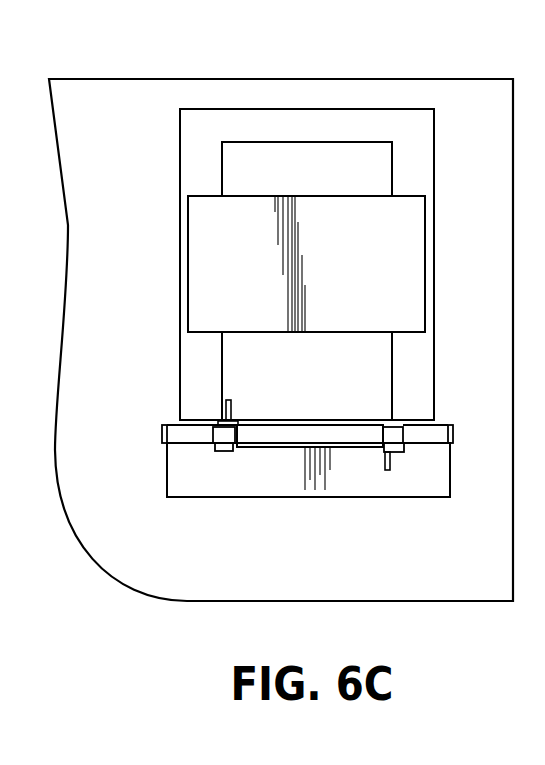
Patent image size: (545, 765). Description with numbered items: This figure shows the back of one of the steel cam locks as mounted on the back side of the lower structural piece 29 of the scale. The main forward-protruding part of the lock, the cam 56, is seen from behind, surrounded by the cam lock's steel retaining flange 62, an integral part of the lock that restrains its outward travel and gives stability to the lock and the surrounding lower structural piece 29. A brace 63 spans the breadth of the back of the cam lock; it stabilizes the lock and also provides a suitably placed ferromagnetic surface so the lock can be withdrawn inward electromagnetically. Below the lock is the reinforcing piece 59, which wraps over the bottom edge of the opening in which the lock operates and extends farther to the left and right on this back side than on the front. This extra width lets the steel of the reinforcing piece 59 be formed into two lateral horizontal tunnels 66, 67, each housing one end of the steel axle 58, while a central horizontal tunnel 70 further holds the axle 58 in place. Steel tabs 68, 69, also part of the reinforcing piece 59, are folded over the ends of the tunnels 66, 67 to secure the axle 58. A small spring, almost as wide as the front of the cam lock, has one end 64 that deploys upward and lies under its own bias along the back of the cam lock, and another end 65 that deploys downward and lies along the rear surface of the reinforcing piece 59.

The lower structural piece 29 is at (440, 165).
The cam 56 is at (283, 173).
The retaining flange 62 is at (414, 127).
The brace 63 is at (410, 262).
The end of small spring 64 is at (232, 410).
The steel tab 68 is at (162, 438).
The lateral horizontal tunnel 66 is at (200, 438).
The steel axle 58 is at (227, 450).
The central horizontal tunnel 70 is at (298, 440).
The end of small spring 65 is at (380, 460).
The lateral horizontal tunnel 67 is at (427, 438).
The reinforcing piece 59 is at (431, 482).
The steel tab 69 is at (455, 438).